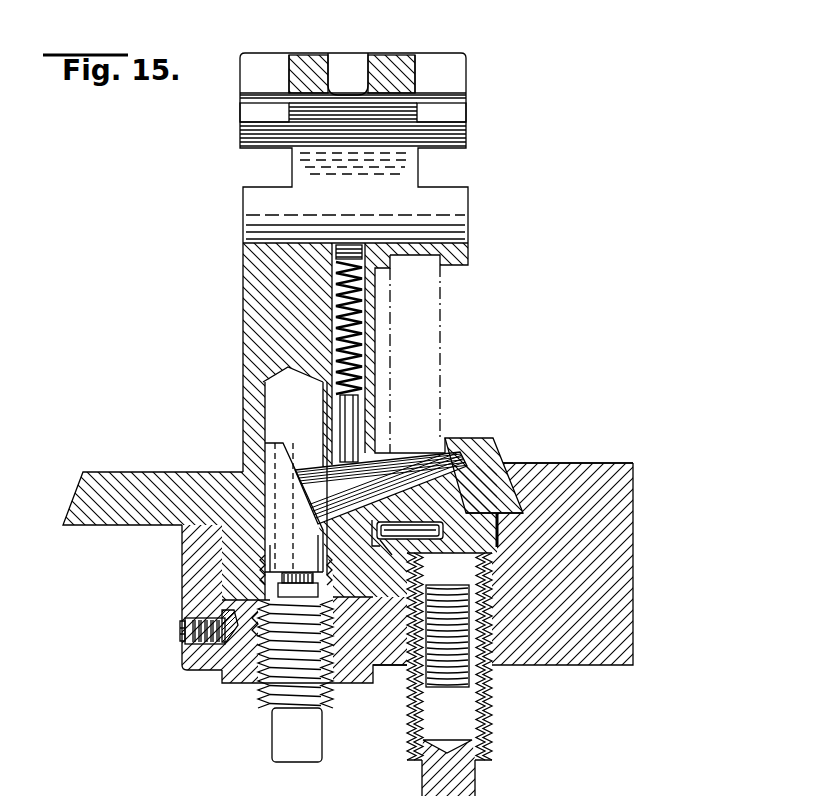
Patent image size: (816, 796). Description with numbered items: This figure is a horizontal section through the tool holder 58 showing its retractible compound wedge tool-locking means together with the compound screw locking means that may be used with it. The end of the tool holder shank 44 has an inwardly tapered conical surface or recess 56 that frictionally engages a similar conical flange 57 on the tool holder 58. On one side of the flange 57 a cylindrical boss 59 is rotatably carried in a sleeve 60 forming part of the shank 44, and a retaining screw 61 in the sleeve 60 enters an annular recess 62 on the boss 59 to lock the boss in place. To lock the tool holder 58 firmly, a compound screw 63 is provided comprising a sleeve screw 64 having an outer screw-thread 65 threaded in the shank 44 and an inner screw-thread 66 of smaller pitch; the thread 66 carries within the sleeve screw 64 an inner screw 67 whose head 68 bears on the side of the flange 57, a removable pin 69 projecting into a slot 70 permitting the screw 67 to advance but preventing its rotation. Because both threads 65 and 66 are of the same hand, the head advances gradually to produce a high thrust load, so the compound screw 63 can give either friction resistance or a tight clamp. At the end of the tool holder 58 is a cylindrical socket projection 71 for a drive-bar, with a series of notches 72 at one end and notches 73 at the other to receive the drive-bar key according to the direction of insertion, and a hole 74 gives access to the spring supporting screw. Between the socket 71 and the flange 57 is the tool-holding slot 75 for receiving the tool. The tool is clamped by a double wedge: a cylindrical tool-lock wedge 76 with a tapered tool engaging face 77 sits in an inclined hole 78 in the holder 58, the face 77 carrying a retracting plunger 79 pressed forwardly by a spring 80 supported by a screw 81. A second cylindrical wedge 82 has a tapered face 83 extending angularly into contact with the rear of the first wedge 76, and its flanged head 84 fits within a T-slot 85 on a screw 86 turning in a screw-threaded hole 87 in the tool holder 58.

The tool holder shank 44 is at (605, 612).
The inwardly tapered conical surface or recess 56 is at (522, 482).
The conical flange 57 is at (97, 483).
The tool holder 58 is at (243, 345).
The cylindrical boss 59 is at (348, 680).
The sleeve 60 is at (190, 548).
The retaining screw 61 is at (182, 620).
The annular recess 62 is at (230, 612).
The compound screw 63 is at (506, 704).
The sleeve screw 64 is at (420, 781).
The outer screw-thread 65 is at (412, 716).
The inner screw-thread 66 is at (468, 698).
The inner screw 67 is at (482, 603).
The head 68 is at (499, 538).
The removable pin 69 is at (415, 526).
The slot 70 is at (396, 553).
The cylindrical socket projection 71 is at (385, 72).
The notches 72 is at (256, 116).
The notches 73 is at (455, 116).
The hole 74 is at (338, 78).
The tool-holding slot 75 is at (420, 255).
The cylindrical tool-lock wedge 76 is at (407, 531).
The tapered tool engaging face 77 is at (422, 452).
The inclined hole 78 is at (475, 438).
The retracting plunger 79 is at (363, 407).
The spring 80 is at (330, 300).
The screw 81 is at (338, 243).
The second cylindrical wedge 82 is at (275, 493).
The tapered face 83 is at (296, 445).
The flanged head 84 is at (294, 549).
The T-slot 85 is at (260, 568).
The screw 86 is at (270, 692).
The screw-threaded hole 87 is at (258, 630).